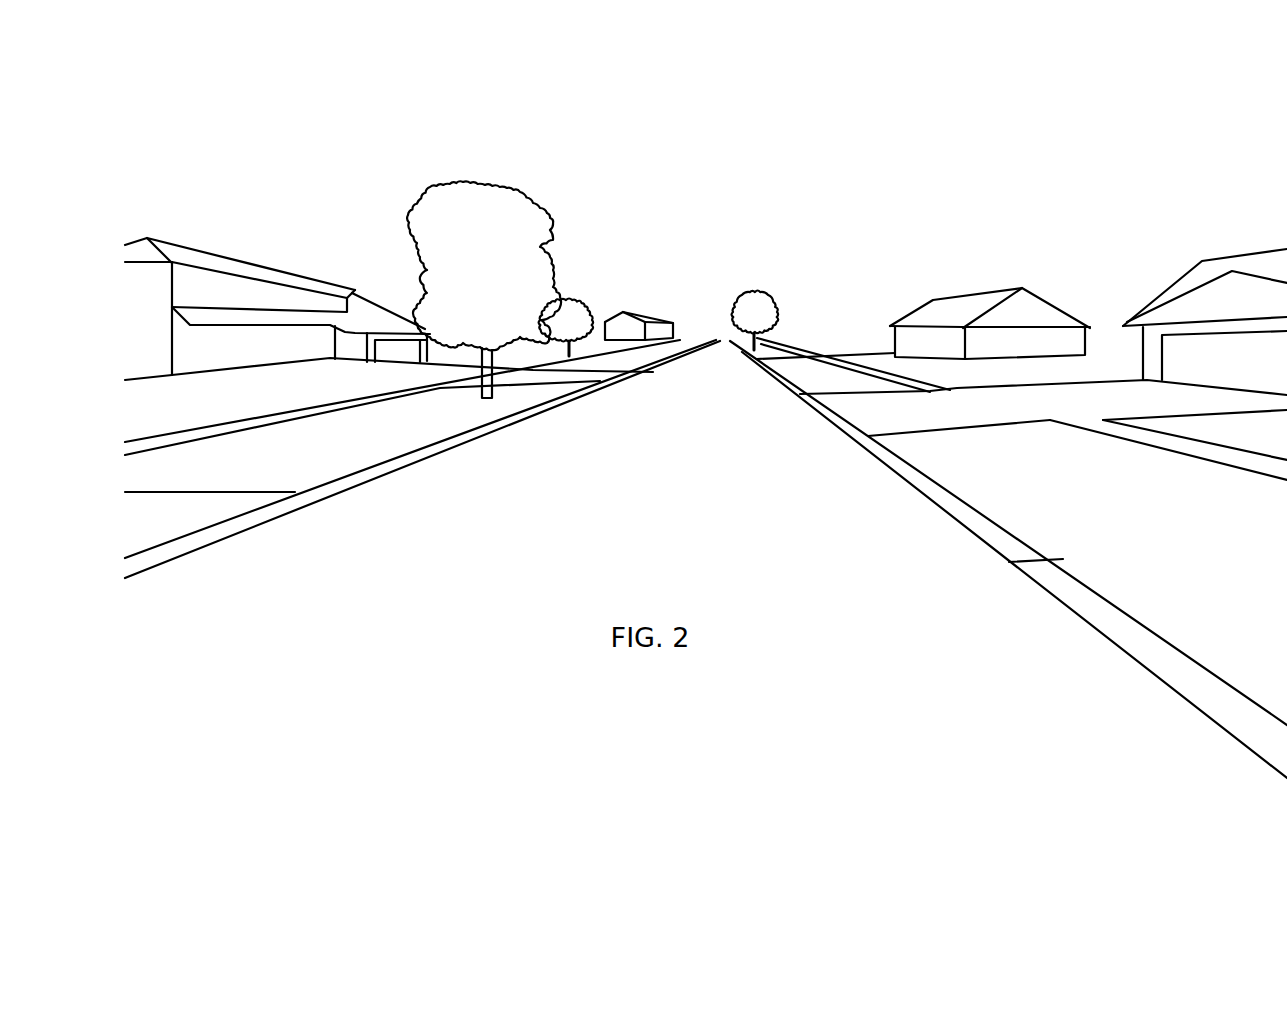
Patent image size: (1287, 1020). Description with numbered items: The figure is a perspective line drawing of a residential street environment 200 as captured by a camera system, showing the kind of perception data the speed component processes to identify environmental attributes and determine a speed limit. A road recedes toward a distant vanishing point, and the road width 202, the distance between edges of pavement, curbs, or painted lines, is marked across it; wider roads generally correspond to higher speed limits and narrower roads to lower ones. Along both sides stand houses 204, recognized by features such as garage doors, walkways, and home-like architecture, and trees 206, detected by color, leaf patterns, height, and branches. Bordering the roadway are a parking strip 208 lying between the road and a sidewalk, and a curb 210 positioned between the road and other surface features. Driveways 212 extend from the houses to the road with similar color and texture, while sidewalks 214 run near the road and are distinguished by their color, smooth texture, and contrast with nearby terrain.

The residential street environment 200 is at (388, 72).
The road width 202 is at (900, 492).
The house 204 is at (203, 250).
The tree 206 is at (522, 203).
The parking strip 208 is at (1010, 562).
The curb 210 is at (975, 522).
The driveway 212 is at (303, 415).
The sidewalk 214 is at (1161, 447).